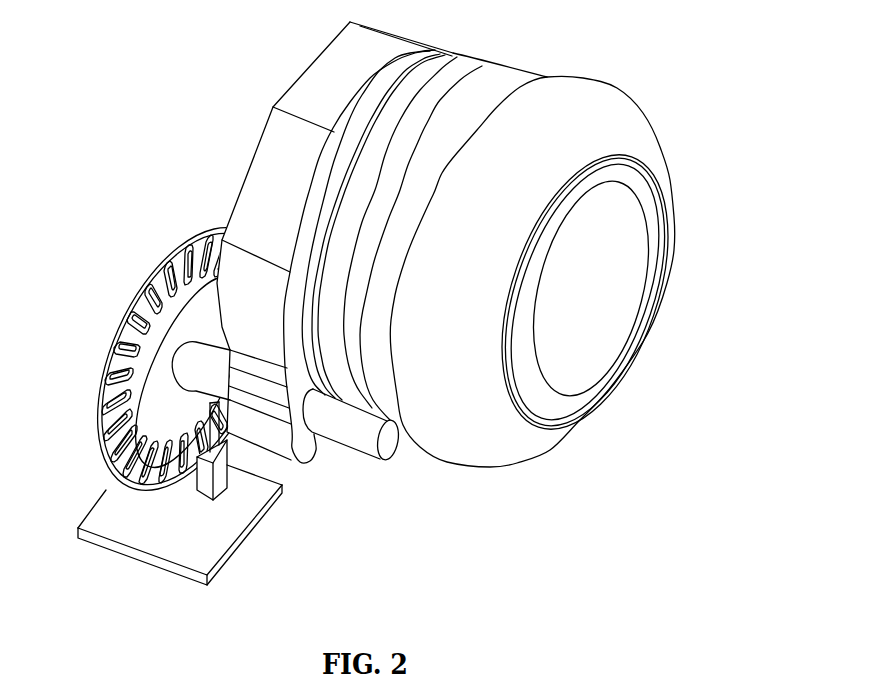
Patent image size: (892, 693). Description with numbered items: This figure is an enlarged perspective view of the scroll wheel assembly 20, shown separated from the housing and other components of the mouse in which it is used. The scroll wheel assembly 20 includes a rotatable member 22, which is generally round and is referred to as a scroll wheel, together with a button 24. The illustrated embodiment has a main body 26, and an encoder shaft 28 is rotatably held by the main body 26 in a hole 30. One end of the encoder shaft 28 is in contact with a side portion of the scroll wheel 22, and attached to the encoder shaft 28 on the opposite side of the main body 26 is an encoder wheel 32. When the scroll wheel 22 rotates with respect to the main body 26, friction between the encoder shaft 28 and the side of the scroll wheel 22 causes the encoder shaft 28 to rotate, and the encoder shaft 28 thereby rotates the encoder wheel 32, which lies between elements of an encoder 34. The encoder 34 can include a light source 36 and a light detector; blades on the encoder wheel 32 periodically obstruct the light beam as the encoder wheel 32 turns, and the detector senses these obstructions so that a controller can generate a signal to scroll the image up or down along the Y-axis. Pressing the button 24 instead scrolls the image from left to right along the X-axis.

The scroll wheel assembly 20 is at (408, 333).
The rotatable member 22 is at (612, 120).
The button 24 is at (608, 300).
The main body 26 is at (315, 72).
The encoder shaft 28 is at (358, 437).
The hole 30 is at (308, 437).
The encoder wheel 32 is at (93, 448).
The encoder 34 is at (170, 547).
The light source 36 is at (227, 467).